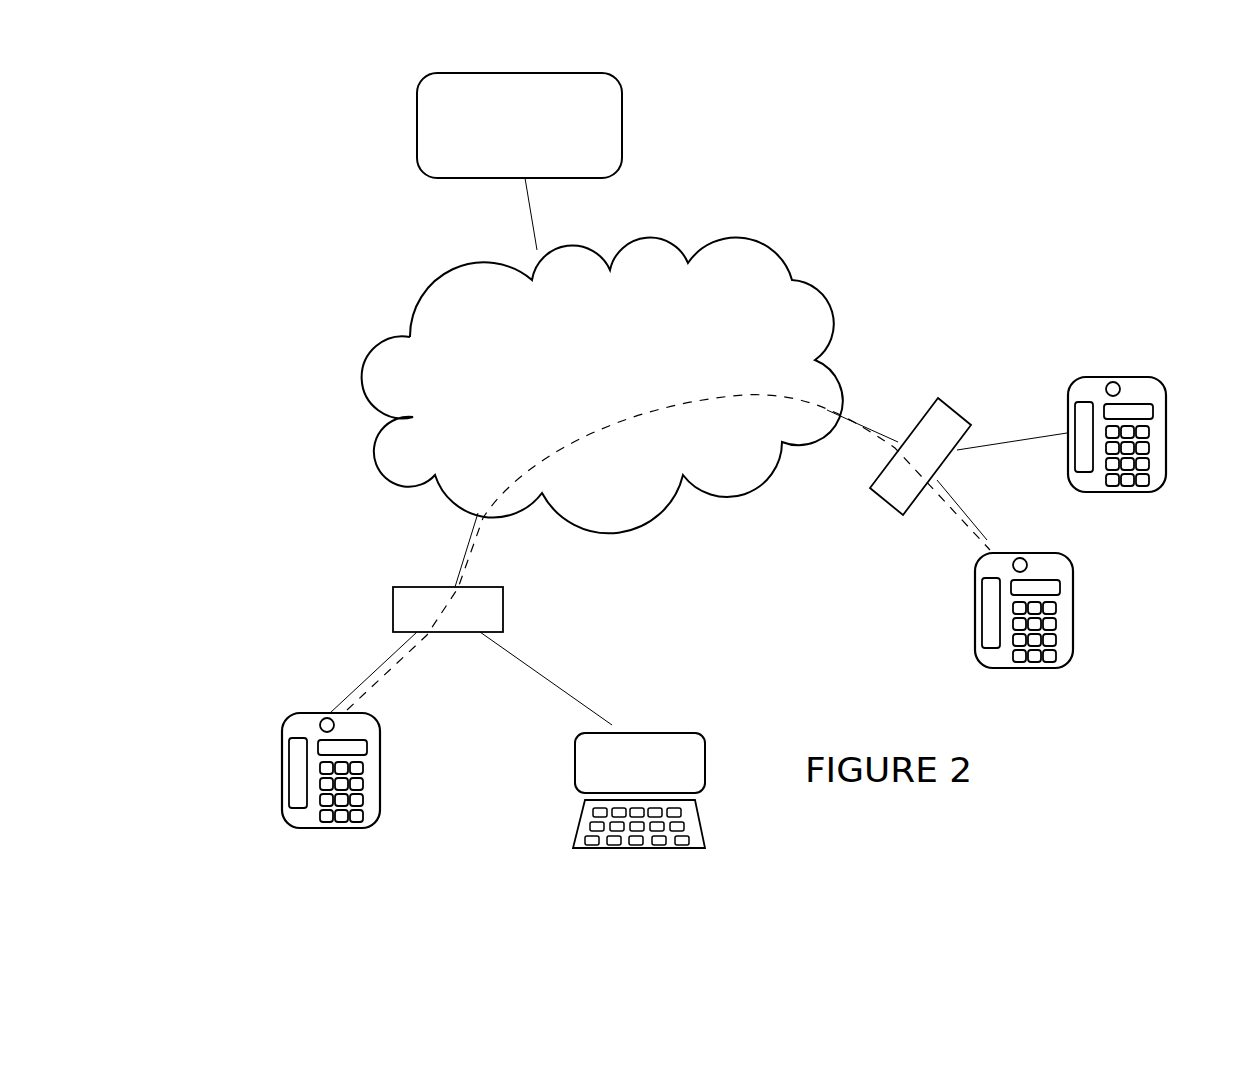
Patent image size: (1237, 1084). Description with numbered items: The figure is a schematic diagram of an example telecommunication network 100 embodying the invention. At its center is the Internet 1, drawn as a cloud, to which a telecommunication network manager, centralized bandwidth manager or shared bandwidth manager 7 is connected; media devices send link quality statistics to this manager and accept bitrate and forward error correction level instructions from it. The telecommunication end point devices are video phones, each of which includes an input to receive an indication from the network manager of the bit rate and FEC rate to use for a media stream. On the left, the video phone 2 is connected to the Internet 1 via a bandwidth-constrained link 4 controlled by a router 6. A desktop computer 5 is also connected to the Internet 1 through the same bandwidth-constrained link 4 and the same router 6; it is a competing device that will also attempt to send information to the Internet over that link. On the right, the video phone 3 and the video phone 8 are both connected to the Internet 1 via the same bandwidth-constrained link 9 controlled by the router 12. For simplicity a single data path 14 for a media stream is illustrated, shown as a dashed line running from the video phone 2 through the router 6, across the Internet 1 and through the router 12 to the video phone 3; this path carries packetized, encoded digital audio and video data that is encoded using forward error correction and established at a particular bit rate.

The telecommunication network 100 is at (357, 207).
The Internet 1 is at (478, 360).
The shared bandwidth manager 7 is at (622, 129).
The bandwidth-constrained link 9 is at (872, 418).
The router 12 is at (947, 400).
The video phone 8 is at (1120, 493).
The bandwidth-constrained link 4 is at (455, 572).
The router 6 is at (393, 605).
The video phone 2 is at (298, 707).
The data path 14 is at (403, 660).
The desktop computer 5 is at (672, 732).
The video phone 3 is at (1075, 633).